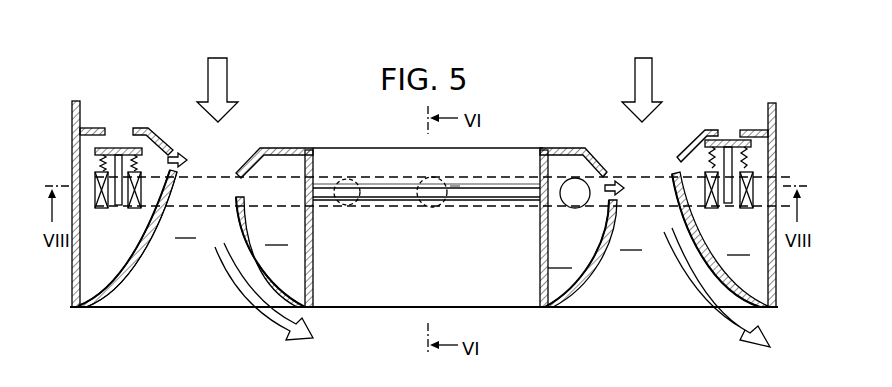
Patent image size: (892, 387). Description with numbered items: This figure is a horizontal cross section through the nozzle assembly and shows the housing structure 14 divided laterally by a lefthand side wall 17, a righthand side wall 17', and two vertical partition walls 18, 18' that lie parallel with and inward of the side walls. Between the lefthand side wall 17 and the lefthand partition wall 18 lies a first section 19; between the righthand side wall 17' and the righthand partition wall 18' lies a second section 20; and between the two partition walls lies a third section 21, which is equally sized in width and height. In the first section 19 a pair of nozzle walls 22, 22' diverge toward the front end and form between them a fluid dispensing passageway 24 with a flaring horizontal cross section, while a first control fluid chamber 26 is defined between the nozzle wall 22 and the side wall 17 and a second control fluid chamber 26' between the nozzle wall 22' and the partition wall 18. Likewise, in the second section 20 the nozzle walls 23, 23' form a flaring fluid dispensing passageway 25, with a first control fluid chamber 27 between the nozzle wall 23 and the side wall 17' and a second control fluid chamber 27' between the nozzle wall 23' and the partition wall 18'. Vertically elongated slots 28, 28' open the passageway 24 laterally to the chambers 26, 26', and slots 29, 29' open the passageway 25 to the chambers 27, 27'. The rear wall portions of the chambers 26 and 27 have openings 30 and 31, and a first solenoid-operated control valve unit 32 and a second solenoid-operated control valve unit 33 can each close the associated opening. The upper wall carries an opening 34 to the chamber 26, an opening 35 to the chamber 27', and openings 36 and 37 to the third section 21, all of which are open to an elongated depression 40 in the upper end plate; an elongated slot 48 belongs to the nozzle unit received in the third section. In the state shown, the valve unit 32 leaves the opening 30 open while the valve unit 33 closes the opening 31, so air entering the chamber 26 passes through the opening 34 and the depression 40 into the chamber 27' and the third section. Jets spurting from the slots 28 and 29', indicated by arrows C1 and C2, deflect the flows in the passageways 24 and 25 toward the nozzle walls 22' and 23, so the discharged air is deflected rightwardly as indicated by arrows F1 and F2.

The housing structure 14 is at (63, 112).
The lefthand side wall 17 is at (84, 237).
The righthand side wall 17' is at (789, 316).
The lefthand partition wall 18 is at (292, 227).
The righthand partition wall 18' is at (553, 227).
The first section 19 is at (181, 313).
The second section 20 is at (625, 314).
The third section 21 is at (378, 314).
The nozzle wall 22 is at (127, 238).
The nozzle wall 22' is at (317, 328).
The nozzle wall 23 is at (722, 253).
The nozzle wall 23' is at (581, 253).
The fluid dispensing passageway 24 is at (185, 228).
The fluid dispensing passageway 25 is at (631, 240).
The first control fluid chamber 26 is at (131, 239).
The second control fluid chamber 26' is at (277, 235).
The first control fluid chamber 27 is at (738, 245).
The second control fluid chamber 27' is at (560, 258).
The slot 28 is at (157, 134).
The slot 28' is at (251, 246).
The slot 29 is at (676, 148).
The slot 29' is at (609, 160).
The opening 30 is at (98, 150).
The opening 31 is at (745, 132).
The first solenoid-operated control valve unit 32 is at (112, 148).
The second solenoid-operated control valve unit 33 is at (780, 142).
The opening 34 is at (118, 206).
The opening 35 is at (575, 209).
The opening 36 is at (426, 184).
The opening 37 is at (349, 205).
The elongated depression 40 is at (473, 179).
The elongated slot 48 is at (468, 194).
The arrow C1 is at (187, 160).
The arrow C2 is at (624, 188).
The arrow F1 is at (270, 327).
The arrow F2 is at (717, 323).